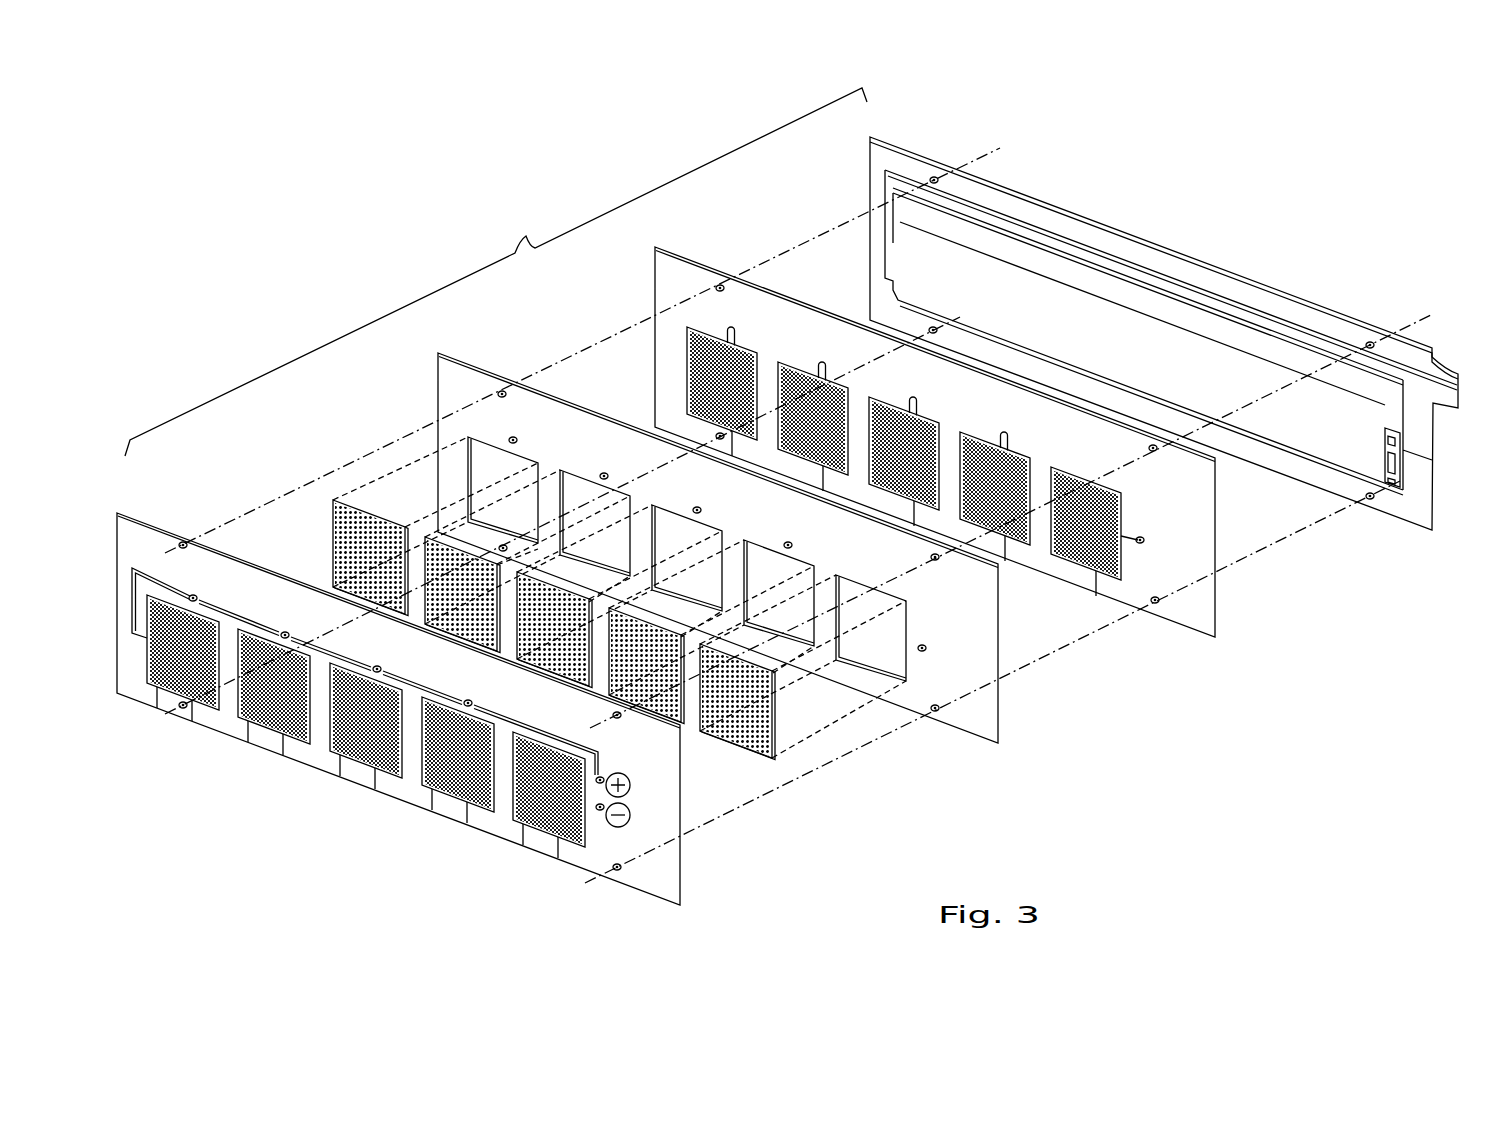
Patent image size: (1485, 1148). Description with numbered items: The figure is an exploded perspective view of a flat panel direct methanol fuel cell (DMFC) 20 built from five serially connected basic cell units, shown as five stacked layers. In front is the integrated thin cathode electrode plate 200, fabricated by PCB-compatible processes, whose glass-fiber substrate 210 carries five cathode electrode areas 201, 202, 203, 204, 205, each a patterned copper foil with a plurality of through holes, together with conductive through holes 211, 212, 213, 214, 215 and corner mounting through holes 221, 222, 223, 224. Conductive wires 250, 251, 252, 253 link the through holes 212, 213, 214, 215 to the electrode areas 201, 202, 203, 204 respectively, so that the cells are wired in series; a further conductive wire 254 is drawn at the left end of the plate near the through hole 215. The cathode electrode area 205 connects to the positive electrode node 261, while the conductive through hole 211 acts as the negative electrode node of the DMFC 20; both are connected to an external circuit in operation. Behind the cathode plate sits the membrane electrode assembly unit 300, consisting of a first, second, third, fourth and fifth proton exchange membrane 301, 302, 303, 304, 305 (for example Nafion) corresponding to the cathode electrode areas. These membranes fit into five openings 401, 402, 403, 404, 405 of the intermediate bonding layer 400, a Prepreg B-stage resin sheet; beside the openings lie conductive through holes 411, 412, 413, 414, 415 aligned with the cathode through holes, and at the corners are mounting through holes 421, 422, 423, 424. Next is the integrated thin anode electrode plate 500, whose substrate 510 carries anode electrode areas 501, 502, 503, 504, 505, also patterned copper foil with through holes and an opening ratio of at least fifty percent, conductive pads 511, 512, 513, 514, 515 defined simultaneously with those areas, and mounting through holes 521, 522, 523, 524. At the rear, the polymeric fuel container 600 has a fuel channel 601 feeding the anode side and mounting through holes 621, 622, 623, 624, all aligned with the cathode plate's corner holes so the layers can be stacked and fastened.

The flat panel DMFC 20 is at (496, 272).
The integrated thin cathode electrode plate 200 is at (122, 528).
The cathode electrode area 201 is at (521, 828).
The cathode electrode area 202 is at (430, 792).
The cathode electrode area 203 is at (338, 757).
The cathode electrode area 204 is at (245, 722).
The cathode electrode area 205 is at (152, 690).
The substrate 210 is at (605, 727).
The conductive through hole 211 is at (601, 812).
The conductive through hole 212 is at (469, 701).
The conductive through hole 213 is at (378, 667).
The conductive through hole 214 is at (286, 633).
The conductive through hole 215 is at (194, 596).
The mounting through hole 221 is at (618, 872).
The mounting through hole 222 is at (620, 716).
The mounting through hole 223 is at (184, 542).
The mounting through hole 224 is at (184, 710).
The conductive wire 250 is at (515, 720).
The conductive wire 251 is at (422, 687).
The conductive wire 252 is at (330, 653).
The conductive wire 253 is at (238, 622).
The conductive trace 254 is at (135, 580).
The positive (cathode) electrode node 261 is at (604, 778).
The membrane electrode assembly (MEA) unit 300 is at (328, 503).
The first proton exchange membrane 301 is at (775, 733).
The second proton exchange membrane 302 is at (655, 633).
The third proton exchange membrane 303 is at (553, 593).
The fourth proton exchange membrane 304 is at (430, 560).
The fifth proton exchange membrane 305 is at (345, 558).
The intermediate bonding layer 400 is at (438, 382).
The opening 401 is at (846, 675).
The opening 402 is at (752, 600).
The opening 403 is at (660, 567).
The opening 404 is at (568, 530).
The opening 405 is at (480, 490).
The conductive through hole 411 is at (923, 652).
The conductive through hole 412 is at (790, 543).
The conductive through hole 413 is at (699, 508).
The conductive through hole 414 is at (606, 474).
The conductive through hole 415 is at (515, 438).
The mounting through hole 421 is at (936, 712).
The mounting through hole 422 is at (937, 560).
The mounting through hole 423 is at (503, 392).
The mounting through hole 424 is at (530, 528).
The integrated thin anode electrode plate 500 is at (655, 270).
The anode electrode area 501 is at (1125, 517).
The anode electrode area 502 is at (1030, 465).
The anode electrode area 503 is at (939, 428).
The anode electrode area 504 is at (848, 395).
The anode electrode area 505 is at (750, 360).
The substrate 510 is at (1144, 457).
The conductive pad 511 is at (1141, 544).
The conductive pad 512 is at (1007, 435).
The conductive pad 513 is at (916, 400).
The conductive pad 514 is at (825, 365).
The conductive pad 515 is at (734, 330).
The mounting through hole 521 is at (1156, 604).
The mounting through hole 522 is at (1155, 451).
The mounting through hole 523 is at (721, 286).
The mounting through hole 524 is at (715, 433).
The fuel container 600 is at (1138, 340).
The fuel channel 601 is at (1133, 272).
The mounting through hole 621 is at (1371, 500).
The mounting through hole 622 is at (1371, 343).
The mounting through hole 623 is at (935, 178).
The mounting through hole 624 is at (930, 331).